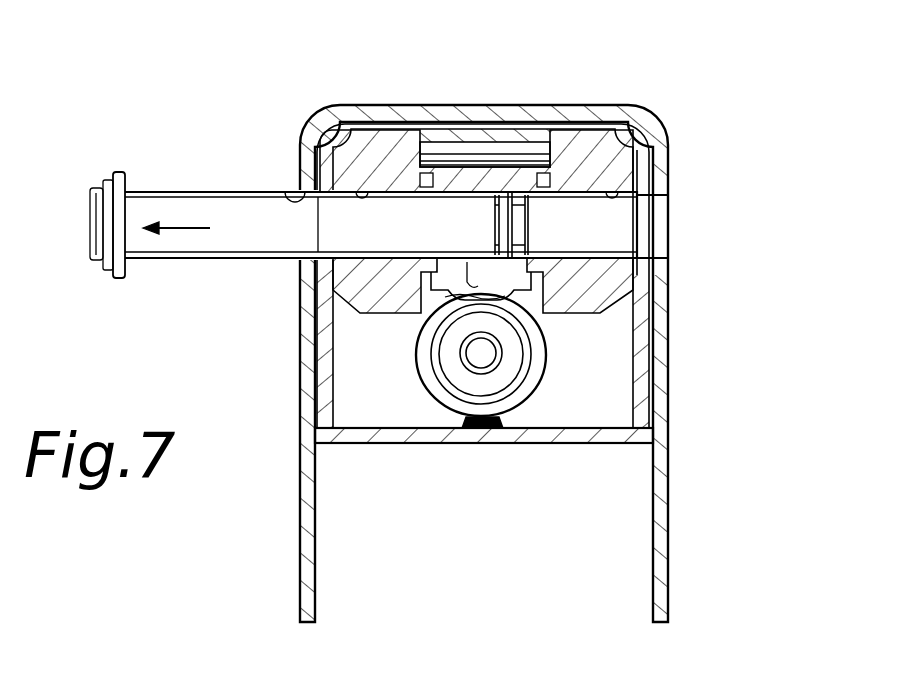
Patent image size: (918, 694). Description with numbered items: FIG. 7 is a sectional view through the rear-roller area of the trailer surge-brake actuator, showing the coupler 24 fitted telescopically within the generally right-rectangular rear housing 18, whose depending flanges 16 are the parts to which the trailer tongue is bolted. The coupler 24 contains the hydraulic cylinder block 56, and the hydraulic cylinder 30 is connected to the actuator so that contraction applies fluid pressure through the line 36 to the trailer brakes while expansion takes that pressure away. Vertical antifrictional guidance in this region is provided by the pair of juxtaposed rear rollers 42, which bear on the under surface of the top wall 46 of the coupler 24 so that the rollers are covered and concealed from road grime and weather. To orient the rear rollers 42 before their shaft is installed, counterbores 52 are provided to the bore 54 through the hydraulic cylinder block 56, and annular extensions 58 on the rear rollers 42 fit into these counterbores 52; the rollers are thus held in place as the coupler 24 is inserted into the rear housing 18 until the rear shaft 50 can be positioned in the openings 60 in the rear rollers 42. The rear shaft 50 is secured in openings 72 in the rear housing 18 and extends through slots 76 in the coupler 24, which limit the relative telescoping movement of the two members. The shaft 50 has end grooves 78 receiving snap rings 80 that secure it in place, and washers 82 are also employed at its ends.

The flanges 16 is at (668, 545).
The rear housing 18 is at (663, 133).
The coupler 24 is at (650, 165).
The hydraulic cylinder 30 is at (552, 392).
The line 36 is at (481, 358).
The rear rollers 42 is at (403, 138).
The top wall of coupler 46 is at (484, 135).
The rear shaft 50 is at (216, 190).
The counterbores 52 is at (423, 186).
The bore 54 is at (466, 268).
The hydraulic cylinder block 56 is at (587, 353).
The annular extensions 58 is at (436, 266).
The openings in rear rollers 60 is at (362, 190).
The openings in rear housing 72 is at (296, 190).
The slots in coupler 76 is at (323, 204).
The end grooves 78 is at (498, 224).
The snap rings 80 is at (110, 178).
The washers 82 is at (127, 176).